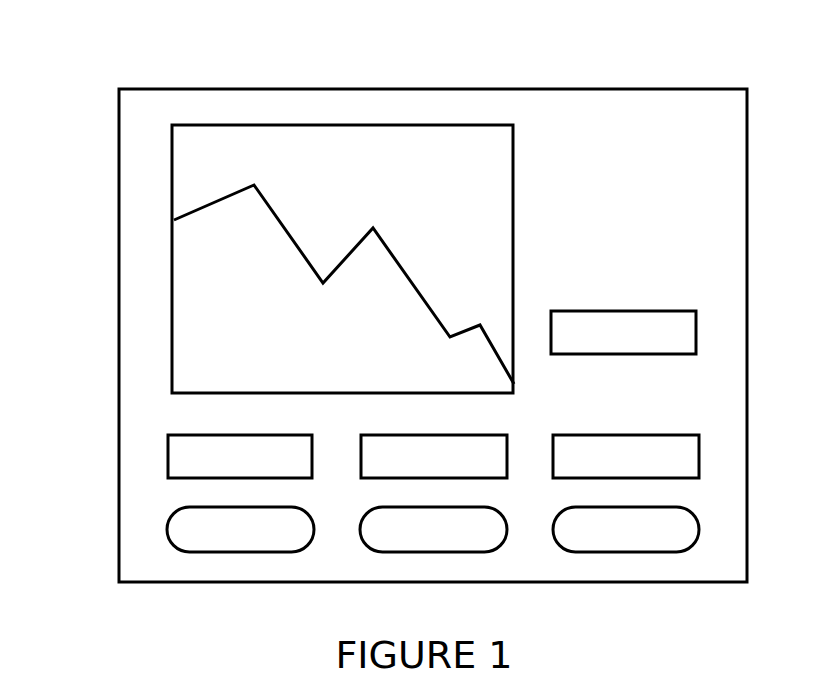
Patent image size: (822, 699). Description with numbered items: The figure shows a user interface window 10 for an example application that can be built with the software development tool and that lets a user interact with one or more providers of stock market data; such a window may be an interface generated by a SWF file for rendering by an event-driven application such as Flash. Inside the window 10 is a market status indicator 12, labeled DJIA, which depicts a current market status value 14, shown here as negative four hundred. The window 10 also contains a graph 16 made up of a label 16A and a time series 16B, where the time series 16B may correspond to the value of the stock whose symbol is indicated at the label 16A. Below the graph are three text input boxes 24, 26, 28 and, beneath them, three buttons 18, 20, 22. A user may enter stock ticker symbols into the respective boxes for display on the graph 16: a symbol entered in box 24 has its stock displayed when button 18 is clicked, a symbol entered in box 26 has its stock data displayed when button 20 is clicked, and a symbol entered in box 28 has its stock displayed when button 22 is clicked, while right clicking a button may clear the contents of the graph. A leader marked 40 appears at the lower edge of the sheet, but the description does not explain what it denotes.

The user interface window 10 is at (118, 571).
The market status indicator 12 is at (700, 330).
The current market status value 14 is at (574, 321).
The graph 16 is at (345, 124).
The label 16A is at (477, 212).
The time series 16B is at (283, 192).
The button 18 is at (225, 551).
The button 20 is at (418, 551).
The button 22 is at (699, 527).
The text input box 24 is at (243, 435).
The text input box 26 is at (435, 435).
The text input box 28 is at (628, 435).
The connection line 40 is at (607, 698).